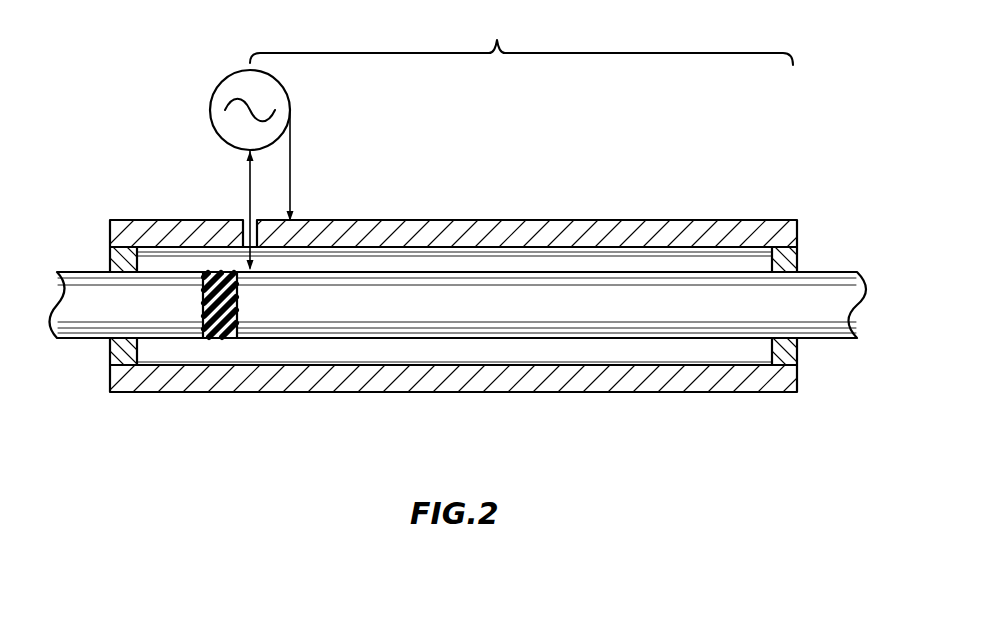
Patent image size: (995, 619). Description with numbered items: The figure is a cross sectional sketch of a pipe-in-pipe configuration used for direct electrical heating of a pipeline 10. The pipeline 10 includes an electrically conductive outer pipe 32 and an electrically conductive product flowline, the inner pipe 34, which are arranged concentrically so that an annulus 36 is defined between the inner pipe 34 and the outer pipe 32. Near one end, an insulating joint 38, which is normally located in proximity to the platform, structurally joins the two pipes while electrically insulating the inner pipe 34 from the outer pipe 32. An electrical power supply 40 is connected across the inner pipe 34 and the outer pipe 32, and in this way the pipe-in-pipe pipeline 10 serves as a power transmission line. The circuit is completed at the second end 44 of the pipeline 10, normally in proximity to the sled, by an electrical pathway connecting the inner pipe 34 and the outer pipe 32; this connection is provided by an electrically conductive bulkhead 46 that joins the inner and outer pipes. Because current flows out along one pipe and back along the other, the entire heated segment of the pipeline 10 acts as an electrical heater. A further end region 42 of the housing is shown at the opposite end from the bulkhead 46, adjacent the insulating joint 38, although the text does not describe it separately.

The pipeline 10 is at (497, 40).
The outer pipe 32 is at (503, 226).
The inner pipe 34 is at (612, 264).
The annulus 36 is at (349, 352).
The insulating joint 38 is at (211, 264).
The electrical power supply 40 is at (302, 106).
The left end cap 42 is at (110, 369).
The second end 44 is at (798, 384).
The electrically conductive bulkhead 46 is at (797, 253).